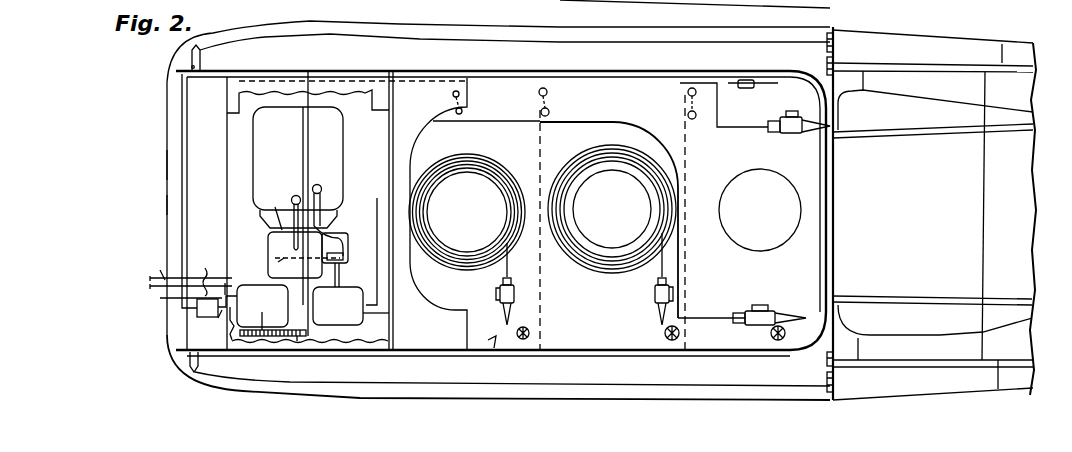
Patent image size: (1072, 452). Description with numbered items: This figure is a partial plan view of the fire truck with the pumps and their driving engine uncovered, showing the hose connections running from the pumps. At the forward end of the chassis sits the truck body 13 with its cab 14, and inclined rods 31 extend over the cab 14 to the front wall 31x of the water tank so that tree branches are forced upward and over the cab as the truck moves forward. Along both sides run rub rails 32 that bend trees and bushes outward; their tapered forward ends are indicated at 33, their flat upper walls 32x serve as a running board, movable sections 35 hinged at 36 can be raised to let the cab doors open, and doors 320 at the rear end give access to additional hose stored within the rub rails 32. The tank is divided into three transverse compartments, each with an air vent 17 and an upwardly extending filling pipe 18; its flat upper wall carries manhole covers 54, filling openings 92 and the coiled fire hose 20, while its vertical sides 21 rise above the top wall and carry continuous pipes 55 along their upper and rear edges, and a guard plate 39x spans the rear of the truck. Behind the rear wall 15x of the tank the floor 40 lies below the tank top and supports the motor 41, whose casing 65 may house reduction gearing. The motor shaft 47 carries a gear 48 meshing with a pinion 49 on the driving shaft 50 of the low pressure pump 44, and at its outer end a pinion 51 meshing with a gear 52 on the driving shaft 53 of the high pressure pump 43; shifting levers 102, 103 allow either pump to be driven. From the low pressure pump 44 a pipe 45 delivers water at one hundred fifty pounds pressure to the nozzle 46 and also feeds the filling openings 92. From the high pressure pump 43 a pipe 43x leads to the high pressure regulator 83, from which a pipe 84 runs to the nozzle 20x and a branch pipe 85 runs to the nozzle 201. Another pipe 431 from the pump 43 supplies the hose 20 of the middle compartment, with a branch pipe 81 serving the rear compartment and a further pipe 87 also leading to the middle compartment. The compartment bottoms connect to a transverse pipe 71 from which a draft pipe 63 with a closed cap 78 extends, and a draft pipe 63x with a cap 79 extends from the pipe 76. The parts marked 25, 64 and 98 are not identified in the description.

The truck body 13 is at (880, 78).
The cab 14 is at (925, 142).
The rear wall of tank 15x is at (452, 313).
The air vent 17 is at (463, 111).
The filling pipe 18 is at (532, 340).
The fire hose 20 is at (446, 164).
The nozzle 20x is at (500, 312).
The nozzle 201 is at (772, 311).
The vertical sides 21 is at (518, 75).
The box 25 is at (318, 298).
The inclined rods 31 is at (956, 138).
The front wall of tank 31x is at (826, 262).
The rub rails 32 is at (262, 2).
The upper walls of rub rails 32x is at (92, 0).
The doors 320 is at (192, 52).
The tapered forward ends 33 is at (814, 9).
The movable sections 35 is at (922, 45).
The hinges 36 is at (835, 53).
The guard plate 39x is at (166, 198).
The floor 40 is at (239, 132).
The motor 41 is at (303, 118).
The high pressure pump 43 is at (177, 298).
The pipe 43x is at (222, 318).
The pipe 431 is at (240, 296).
The low pressure pump 44 is at (386, 318).
The pipe 45 is at (308, 150).
The nozzle 46 is at (792, 134).
The motor shaft 47 is at (292, 298).
The gear 48 is at (268, 260).
The pinion 49 is at (345, 256).
The driving shaft of low pressure pump 50 is at (341, 272).
The pinion 51 is at (298, 338).
The gear 52 is at (268, 336).
The driving shaft of high pressure pump 53 is at (273, 322).
The manhole covers 54 is at (462, 240).
The continuous pipes 55 is at (394, 72).
The draft pipe 63 is at (205, 268).
The draft pipe 63x is at (160, 270).
The bracket 64 is at (491, 351).
The casing of motor 65 is at (272, 207).
The transverse pipe 71 is at (372, 206).
The pipe 76 is at (304, 255).
The closed cap 78 is at (145, 287).
The cap 79 is at (145, 278).
The pipe 81 is at (520, 155).
The high pressure regulator 83 is at (200, 318).
The pipe 84 is at (178, 163).
The pipe 85 is at (687, 148).
The pipe 87 is at (660, 143).
The filling openings 92 is at (459, 92).
The cable 98 is at (225, 283).
The shifting lever 102 is at (295, 196).
The shifting lever 103 is at (321, 186).